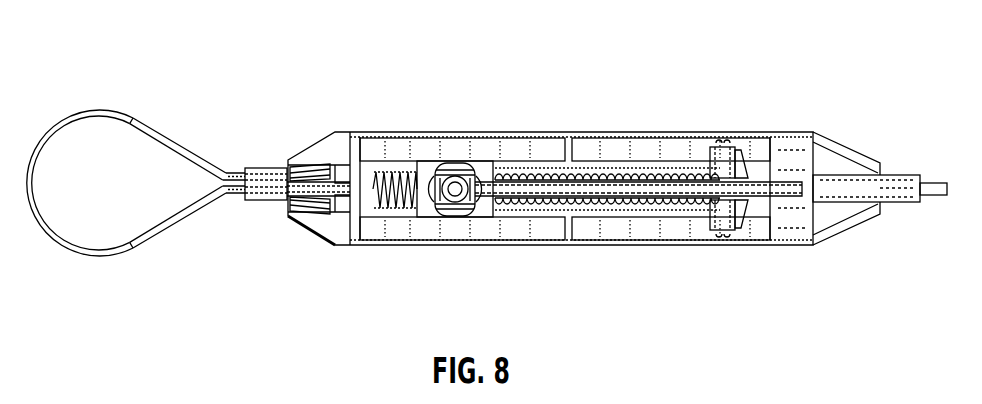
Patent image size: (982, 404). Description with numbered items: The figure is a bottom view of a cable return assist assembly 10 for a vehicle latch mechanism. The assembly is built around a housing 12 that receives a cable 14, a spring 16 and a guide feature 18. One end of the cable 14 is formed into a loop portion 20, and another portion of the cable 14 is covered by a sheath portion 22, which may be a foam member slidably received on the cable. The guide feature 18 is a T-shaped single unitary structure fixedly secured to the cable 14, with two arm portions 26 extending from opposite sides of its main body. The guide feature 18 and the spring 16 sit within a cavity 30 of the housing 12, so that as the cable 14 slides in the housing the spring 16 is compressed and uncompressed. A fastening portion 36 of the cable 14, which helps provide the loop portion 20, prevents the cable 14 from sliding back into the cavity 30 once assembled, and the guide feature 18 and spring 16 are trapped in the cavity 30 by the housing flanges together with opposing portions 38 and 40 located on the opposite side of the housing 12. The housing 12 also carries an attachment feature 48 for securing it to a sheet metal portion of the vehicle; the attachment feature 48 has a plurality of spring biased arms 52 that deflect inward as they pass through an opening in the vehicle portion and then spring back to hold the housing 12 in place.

The cable return assist assembly 10 is at (532, 92).
The housing 12 is at (660, 132).
The cable 14 is at (326, 188).
The spring 16 is at (385, 172).
The guide feature 18 is at (746, 150).
The loop portion 20 is at (128, 117).
The sheath portion 22 is at (906, 204).
The arm portions 26 is at (720, 146).
The cavity 30 is at (653, 228).
The fastening portion 36 is at (262, 168).
The opposing portion 38 is at (577, 192).
The opposing portion 40 is at (481, 199).
The attachment feature 48 is at (456, 164).
The spring biased arms 52 is at (448, 160).